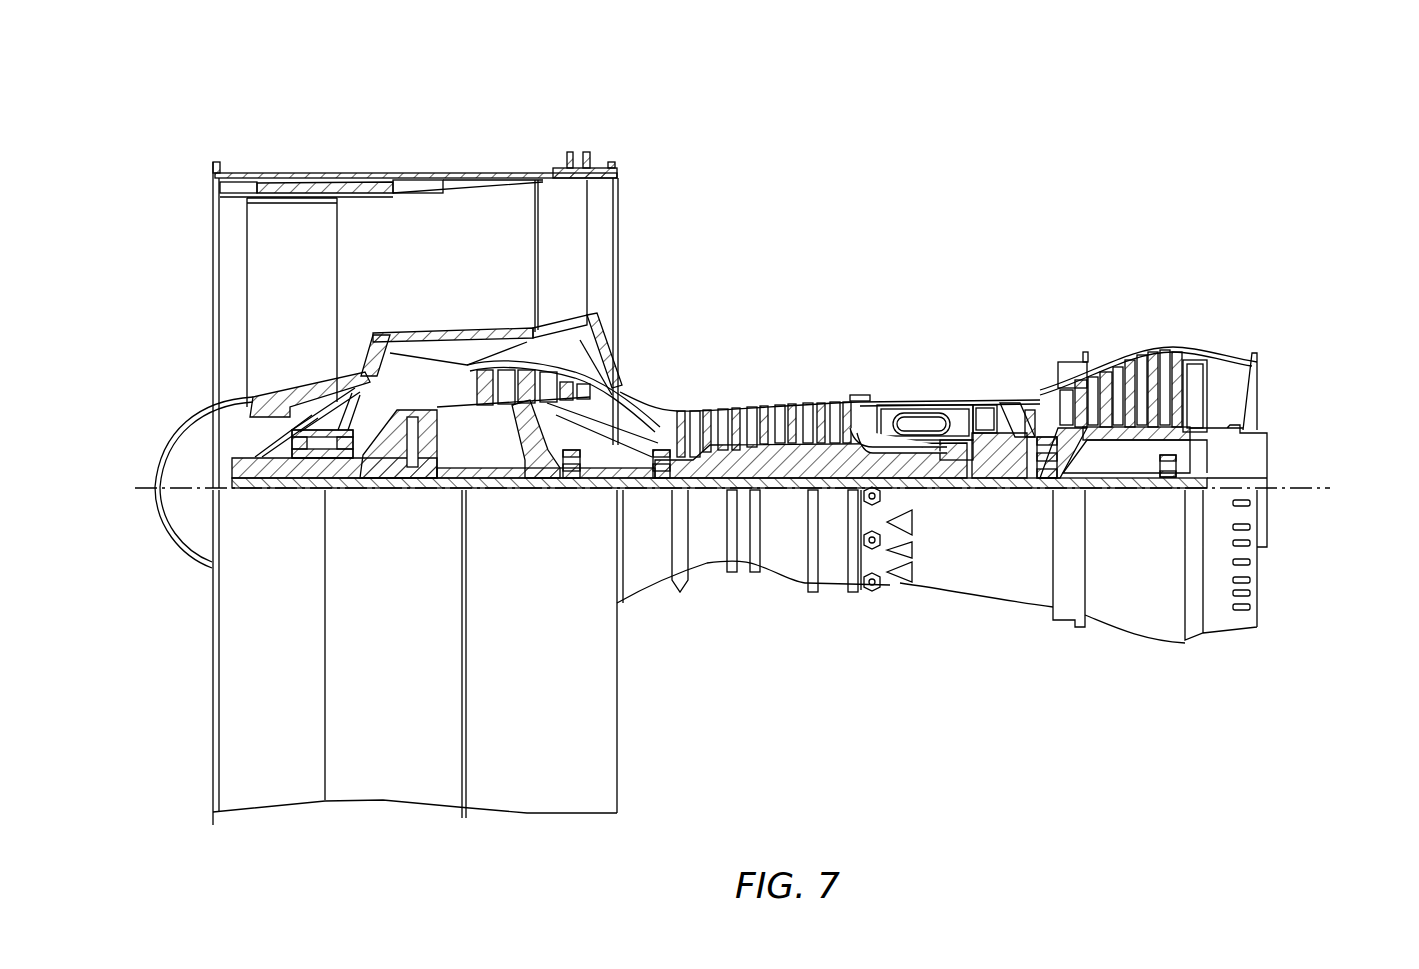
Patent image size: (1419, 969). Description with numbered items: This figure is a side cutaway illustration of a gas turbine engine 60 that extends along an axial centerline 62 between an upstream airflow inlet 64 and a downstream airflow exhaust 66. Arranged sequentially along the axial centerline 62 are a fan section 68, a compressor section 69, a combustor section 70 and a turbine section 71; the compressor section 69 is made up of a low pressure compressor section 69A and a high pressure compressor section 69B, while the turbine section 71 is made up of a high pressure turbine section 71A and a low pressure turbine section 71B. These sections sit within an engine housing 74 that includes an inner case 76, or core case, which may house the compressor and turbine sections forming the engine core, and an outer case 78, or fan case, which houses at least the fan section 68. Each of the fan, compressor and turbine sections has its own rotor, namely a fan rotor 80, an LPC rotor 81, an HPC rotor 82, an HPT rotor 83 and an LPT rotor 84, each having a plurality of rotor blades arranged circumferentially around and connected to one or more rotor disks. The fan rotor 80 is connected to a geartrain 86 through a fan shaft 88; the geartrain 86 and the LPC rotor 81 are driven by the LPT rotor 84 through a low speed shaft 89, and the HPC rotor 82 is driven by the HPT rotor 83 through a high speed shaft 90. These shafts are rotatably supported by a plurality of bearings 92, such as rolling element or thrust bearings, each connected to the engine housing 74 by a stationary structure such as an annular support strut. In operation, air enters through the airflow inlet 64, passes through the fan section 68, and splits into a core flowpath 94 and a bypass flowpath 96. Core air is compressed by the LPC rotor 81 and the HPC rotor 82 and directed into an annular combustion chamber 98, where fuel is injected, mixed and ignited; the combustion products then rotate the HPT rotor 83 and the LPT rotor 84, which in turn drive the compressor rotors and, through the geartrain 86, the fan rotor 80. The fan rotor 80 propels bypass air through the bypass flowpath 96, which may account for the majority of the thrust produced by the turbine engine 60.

The gas turbine engine 60 is at (122, 100).
The axial centerline 62 is at (1330, 492).
The airflow inlet 64 is at (213, 275).
The airflow exhaust 66 is at (1258, 386).
The fan section 68 is at (385, 160).
The compressor section 69 is at (838, 85).
The low pressure compressor section 69A is at (620, 132).
The high pressure compressor section 69B is at (837, 327).
The combustor section 70 is at (960, 327).
The turbine section 71 is at (1218, 260).
The high pressure turbine section 71A is at (1040, 327).
The low pressure turbine section 71B is at (1218, 327).
The engine housing 74 is at (646, 620).
The inner case 76 is at (828, 586).
The outer case 78 is at (575, 813).
The fan rotor 80 is at (248, 417).
The LPC rotor 81 is at (527, 430).
The HPC rotor 82 is at (797, 482).
The HPT rotor 83 is at (985, 480).
The LPT rotor 84 is at (1128, 437).
The geartrain 86 is at (420, 480).
The fan shaft 88 is at (252, 490).
The low speed shaft 89 is at (1165, 490).
The high speed shaft 90 is at (912, 480).
The bearings 92 is at (307, 460).
The core flowpath 94 is at (648, 406).
The bypass flowpath 96 is at (450, 284).
The combustion chamber 98 is at (915, 432).